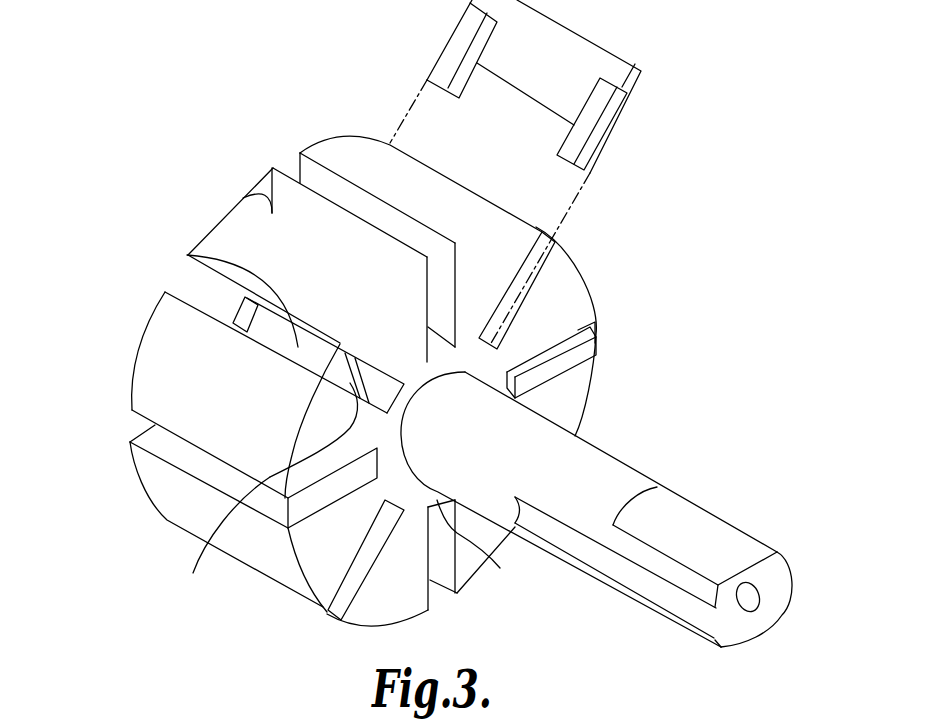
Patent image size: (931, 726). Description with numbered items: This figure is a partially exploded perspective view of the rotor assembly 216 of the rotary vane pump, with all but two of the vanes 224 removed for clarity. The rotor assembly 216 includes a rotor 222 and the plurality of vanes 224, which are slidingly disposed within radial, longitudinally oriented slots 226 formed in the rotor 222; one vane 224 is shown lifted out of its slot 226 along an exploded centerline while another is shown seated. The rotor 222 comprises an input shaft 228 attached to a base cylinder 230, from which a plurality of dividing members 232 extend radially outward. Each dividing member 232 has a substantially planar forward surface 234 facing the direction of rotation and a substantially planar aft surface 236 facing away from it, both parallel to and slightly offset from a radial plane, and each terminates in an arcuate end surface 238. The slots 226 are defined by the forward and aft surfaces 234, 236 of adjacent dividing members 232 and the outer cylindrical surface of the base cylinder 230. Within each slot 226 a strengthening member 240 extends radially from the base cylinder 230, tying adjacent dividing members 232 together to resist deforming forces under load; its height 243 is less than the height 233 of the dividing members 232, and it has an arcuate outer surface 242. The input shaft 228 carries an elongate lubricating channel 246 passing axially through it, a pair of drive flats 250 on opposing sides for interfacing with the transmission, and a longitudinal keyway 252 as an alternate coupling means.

The rotor assembly 216 is at (193, 612).
The rotor 222 is at (590, 280).
The vane 224 is at (620, 115).
The slot 226 is at (290, 163).
The input shaft 228 is at (627, 468).
The base cylinder 230 is at (500, 568).
The dividing member 232 is at (387, 287).
The height of the dividing members 233 is at (270, 195).
The forward surface 234 is at (187, 458).
The aft surface 236 is at (327, 612).
The arcuate end surface 238 is at (155, 358).
The strengthening member 240 is at (223, 538).
The arcuate outer surface 242 is at (233, 322).
The height of the strengthening member 243 is at (342, 372).
The lubricating channel 246 is at (748, 613).
The drive flat 250 is at (727, 533).
The keyway 252 is at (650, 610).